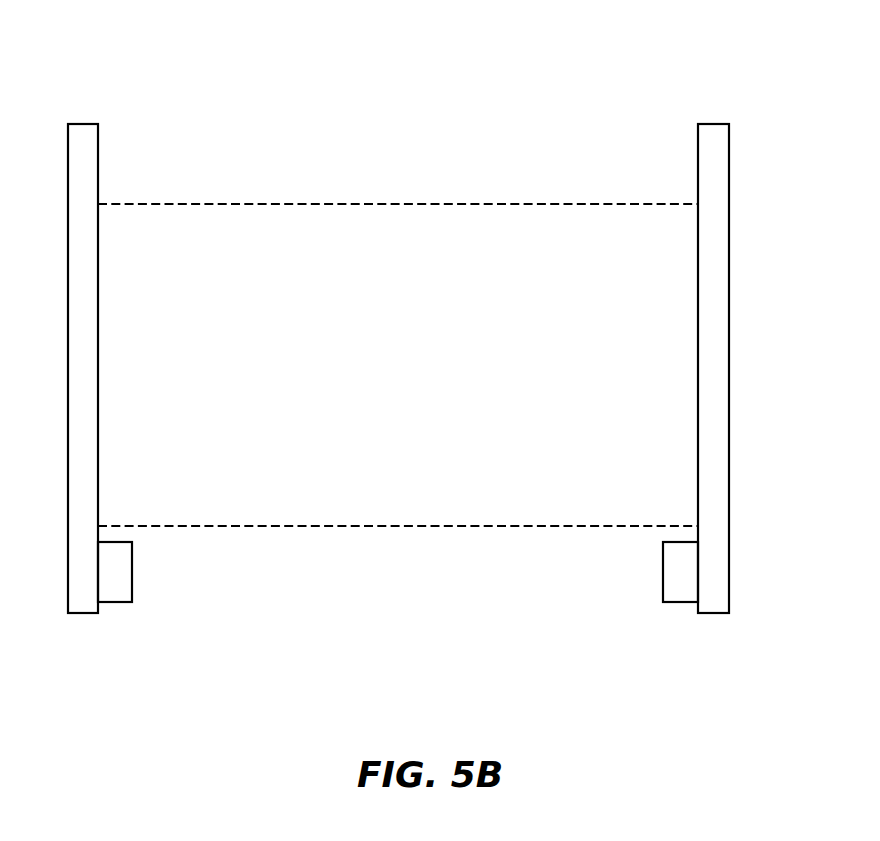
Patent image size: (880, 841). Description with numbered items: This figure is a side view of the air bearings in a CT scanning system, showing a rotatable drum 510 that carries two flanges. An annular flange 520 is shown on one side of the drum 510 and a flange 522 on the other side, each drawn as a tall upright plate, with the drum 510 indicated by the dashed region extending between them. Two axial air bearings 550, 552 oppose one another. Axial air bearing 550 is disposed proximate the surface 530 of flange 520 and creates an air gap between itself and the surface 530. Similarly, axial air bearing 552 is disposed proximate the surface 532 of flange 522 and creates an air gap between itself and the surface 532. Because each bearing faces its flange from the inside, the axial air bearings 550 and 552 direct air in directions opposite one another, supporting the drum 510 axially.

The rotatable drum 510 is at (397, 253).
The annular flange 520 is at (88, 124).
The flange 522 is at (714, 124).
The surface 530 is at (98, 180).
The surface 532 is at (698, 169).
The axial air bearing 550 is at (117, 583).
The axial air bearing 552 is at (683, 577).